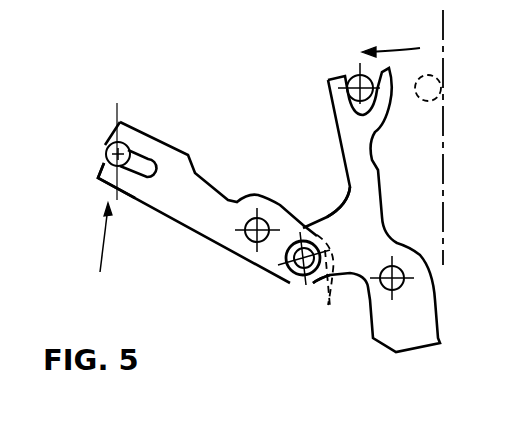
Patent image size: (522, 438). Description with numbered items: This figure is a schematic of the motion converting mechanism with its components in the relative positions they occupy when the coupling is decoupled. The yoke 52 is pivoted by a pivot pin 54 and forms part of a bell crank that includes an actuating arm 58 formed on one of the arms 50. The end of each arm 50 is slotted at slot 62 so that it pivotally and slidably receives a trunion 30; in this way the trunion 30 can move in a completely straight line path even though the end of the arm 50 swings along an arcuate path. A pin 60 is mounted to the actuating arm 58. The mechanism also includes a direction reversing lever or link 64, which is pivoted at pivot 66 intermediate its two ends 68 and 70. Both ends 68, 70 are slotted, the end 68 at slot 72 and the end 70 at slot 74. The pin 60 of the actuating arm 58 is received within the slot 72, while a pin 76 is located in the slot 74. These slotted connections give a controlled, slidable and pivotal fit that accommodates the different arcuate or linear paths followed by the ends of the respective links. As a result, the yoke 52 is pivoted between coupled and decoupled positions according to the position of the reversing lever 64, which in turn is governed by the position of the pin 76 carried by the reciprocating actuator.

The trunion 30 is at (353, 75).
The arm 50 is at (358, 150).
The yoke 52 is at (412, 350).
The pivot pin 54 is at (404, 280).
The actuating arm 58 is at (322, 218).
The pin 60 is at (292, 285).
The slot 62 is at (358, 120).
The direction reversing lever 64 is at (181, 207).
The pivot 66 is at (255, 240).
The end of link 68 is at (313, 286).
The end of link 70 is at (100, 165).
The slot 72 is at (343, 279).
The slot 74 is at (115, 189).
The pin 76 is at (105, 145).